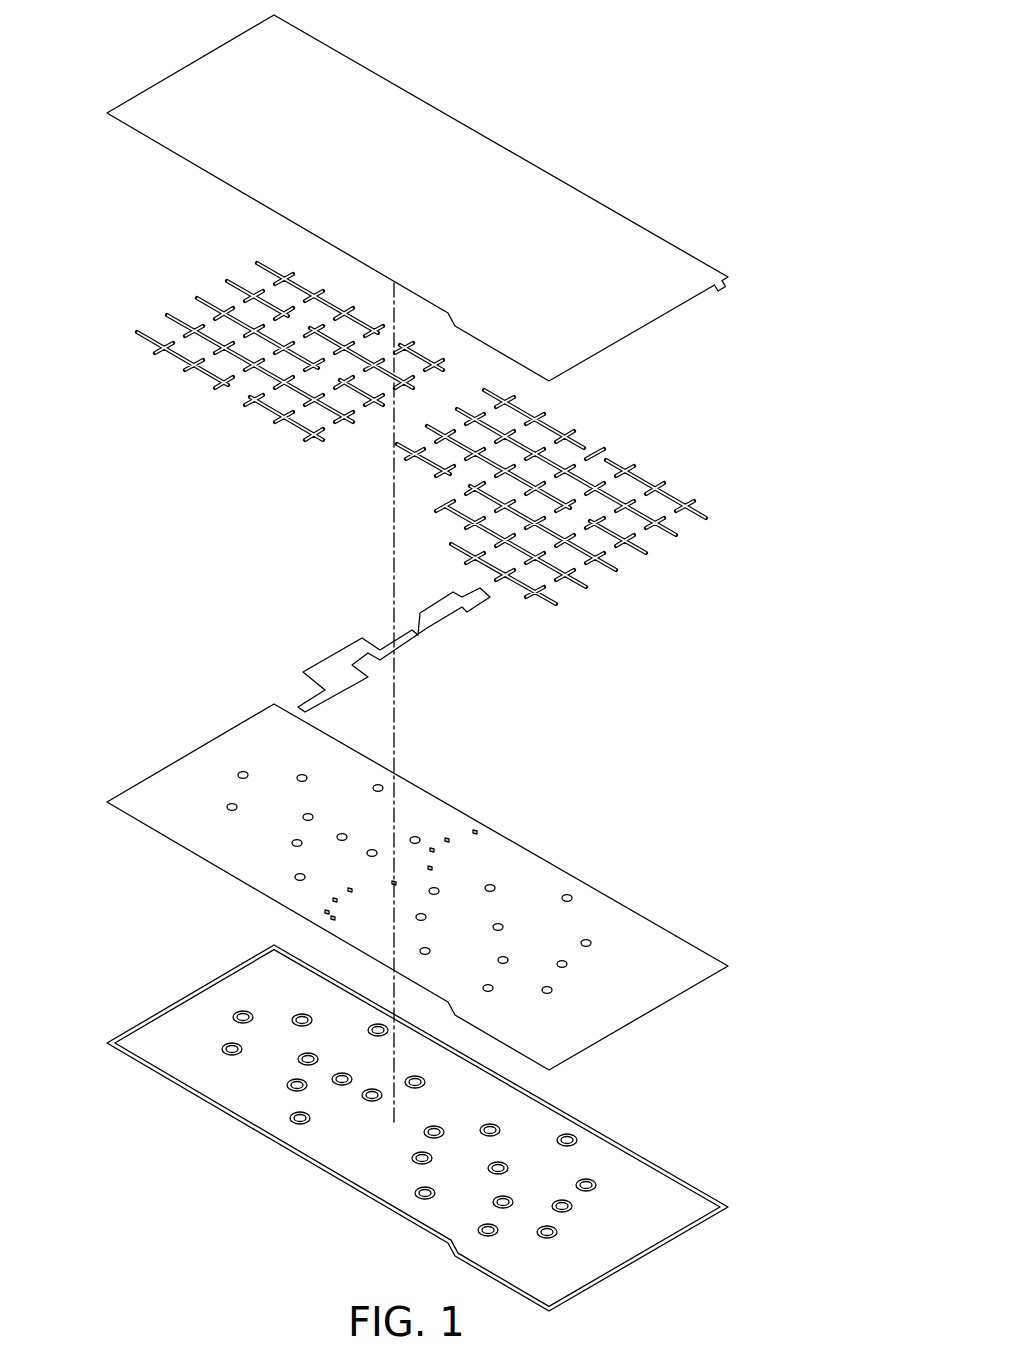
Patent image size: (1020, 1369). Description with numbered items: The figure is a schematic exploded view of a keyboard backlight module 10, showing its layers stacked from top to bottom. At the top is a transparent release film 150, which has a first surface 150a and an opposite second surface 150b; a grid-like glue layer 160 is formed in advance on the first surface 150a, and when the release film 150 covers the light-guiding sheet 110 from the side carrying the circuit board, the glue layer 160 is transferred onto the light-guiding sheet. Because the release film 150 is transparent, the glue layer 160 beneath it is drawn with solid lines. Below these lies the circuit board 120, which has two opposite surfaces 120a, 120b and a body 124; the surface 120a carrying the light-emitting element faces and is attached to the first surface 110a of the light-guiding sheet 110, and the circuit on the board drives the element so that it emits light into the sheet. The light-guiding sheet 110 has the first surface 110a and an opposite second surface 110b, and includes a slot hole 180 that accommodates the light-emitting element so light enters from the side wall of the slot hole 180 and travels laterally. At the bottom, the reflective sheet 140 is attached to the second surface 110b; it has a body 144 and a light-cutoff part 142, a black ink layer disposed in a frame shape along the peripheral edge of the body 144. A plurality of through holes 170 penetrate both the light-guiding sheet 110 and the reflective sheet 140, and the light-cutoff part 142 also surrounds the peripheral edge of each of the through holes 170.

The keyboard backlight module 10 is at (784, 58).
The light-guiding sheet 110 is at (112, 766).
The first surface 110a is at (142, 818).
The second surface 110b is at (196, 866).
The circuit board 120 is at (278, 648).
The surface 120a is at (444, 656).
The surface 120b is at (326, 672).
The body 124 is at (440, 622).
The reflective sheet 140 is at (403, 1122).
The light-cutoff part 142 is at (192, 1094).
The body 144 is at (244, 1100).
The release film 150 is at (140, 34).
The first surface 150a is at (620, 355).
The second surface 150b is at (668, 312).
The glue layer 160 is at (140, 278).
The through holes 170 is at (491, 880).
The slot hole 180 is at (449, 835).